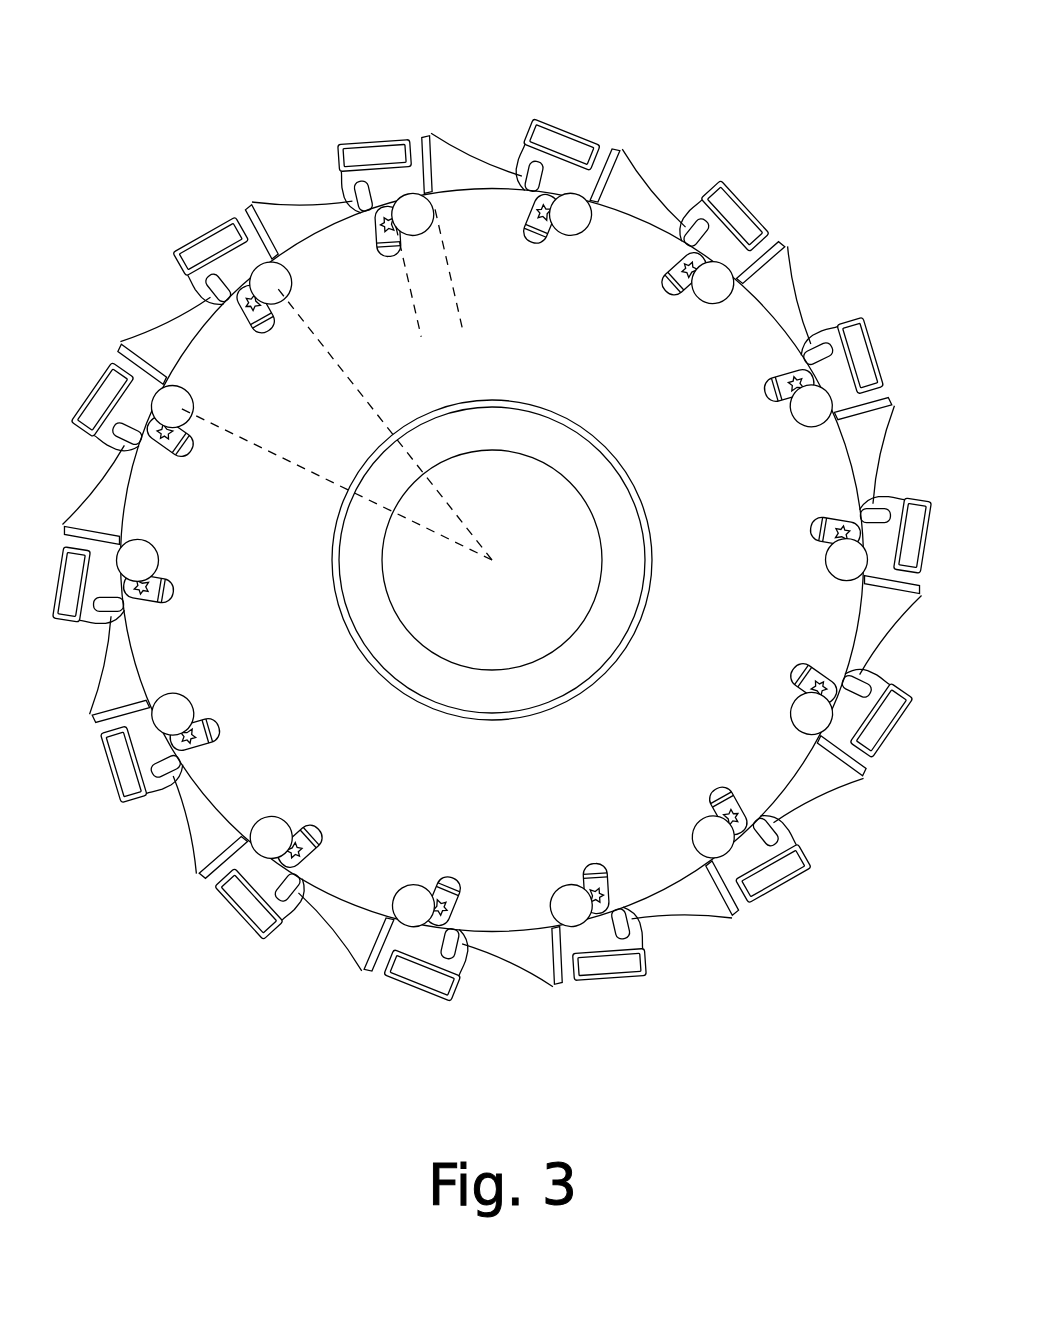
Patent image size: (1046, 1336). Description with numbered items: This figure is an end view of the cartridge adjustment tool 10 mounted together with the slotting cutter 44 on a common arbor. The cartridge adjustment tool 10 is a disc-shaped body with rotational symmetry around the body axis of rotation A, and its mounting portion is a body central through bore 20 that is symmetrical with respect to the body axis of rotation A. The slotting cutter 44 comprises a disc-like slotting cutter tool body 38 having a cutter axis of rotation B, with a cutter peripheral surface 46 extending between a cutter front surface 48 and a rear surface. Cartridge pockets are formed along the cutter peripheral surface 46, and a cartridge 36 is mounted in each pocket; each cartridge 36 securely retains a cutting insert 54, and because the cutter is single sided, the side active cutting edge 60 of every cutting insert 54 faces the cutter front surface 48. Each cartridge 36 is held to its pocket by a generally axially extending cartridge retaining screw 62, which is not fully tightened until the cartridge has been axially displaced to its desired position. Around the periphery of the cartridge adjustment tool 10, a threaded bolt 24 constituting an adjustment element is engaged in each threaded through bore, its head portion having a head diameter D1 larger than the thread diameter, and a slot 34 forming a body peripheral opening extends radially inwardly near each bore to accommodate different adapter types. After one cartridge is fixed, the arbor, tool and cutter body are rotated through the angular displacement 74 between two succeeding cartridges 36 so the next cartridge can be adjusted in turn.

The cartridge adjustment tool 10 is at (835, 490).
The body central through bore 20 is at (495, 665).
The threaded bolt 24 is at (712, 282).
The slot 34 is at (540, 218).
The cartridge 36 is at (529, 169).
The slotting cutter tool body 38 is at (302, 202).
The slotting cutter 44 is at (432, 125).
The cutter peripheral surface 46 is at (654, 188).
The cutter front surface 48 is at (799, 295).
The cutting insert 54 is at (562, 145).
The side active cutting edge 60 is at (862, 330).
The cartridge retaining screw 62 is at (204, 290).
The angular displacement 74 is at (332, 358).
The head diameter D1 is at (439, 273).
The body axis of rotation A is at (493, 561).
The cutter axis of rotation B is at (492, 561).